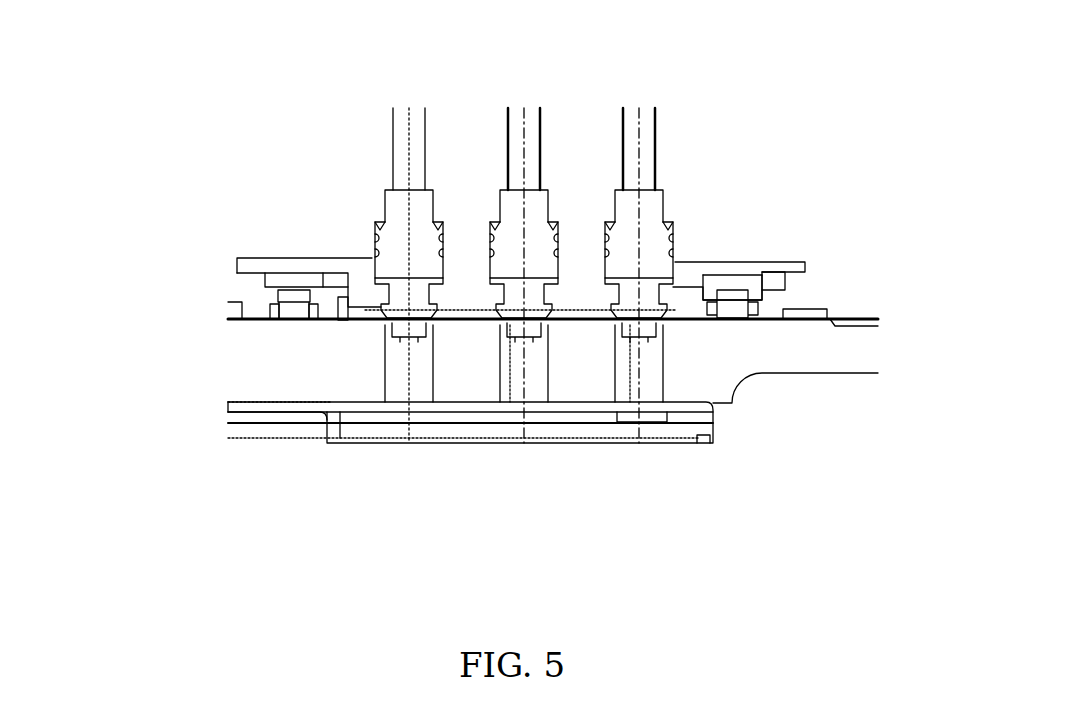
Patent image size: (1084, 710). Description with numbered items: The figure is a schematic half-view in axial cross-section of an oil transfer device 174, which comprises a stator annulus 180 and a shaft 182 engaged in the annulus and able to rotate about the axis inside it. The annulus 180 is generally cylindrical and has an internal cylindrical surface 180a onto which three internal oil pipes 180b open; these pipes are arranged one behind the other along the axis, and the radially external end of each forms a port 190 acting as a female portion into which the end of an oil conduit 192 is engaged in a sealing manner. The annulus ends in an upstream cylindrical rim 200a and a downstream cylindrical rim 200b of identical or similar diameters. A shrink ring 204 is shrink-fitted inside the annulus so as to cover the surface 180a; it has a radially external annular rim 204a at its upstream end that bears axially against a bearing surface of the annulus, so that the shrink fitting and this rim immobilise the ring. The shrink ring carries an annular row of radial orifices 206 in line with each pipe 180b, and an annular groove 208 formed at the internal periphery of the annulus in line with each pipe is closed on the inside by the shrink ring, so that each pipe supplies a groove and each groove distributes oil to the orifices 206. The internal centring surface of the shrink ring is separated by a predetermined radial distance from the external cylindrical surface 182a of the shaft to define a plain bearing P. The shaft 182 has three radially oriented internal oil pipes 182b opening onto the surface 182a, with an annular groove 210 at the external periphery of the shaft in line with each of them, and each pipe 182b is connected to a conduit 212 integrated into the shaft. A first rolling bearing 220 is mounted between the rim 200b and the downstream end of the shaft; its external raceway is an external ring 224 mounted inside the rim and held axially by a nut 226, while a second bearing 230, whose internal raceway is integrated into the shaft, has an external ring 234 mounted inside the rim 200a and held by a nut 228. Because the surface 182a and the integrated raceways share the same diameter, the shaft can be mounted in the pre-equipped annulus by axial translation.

The oil transfer device 174 is at (710, 255).
The stator annulus 180 is at (367, 268).
The internal cylindrical surface 180a is at (498, 420).
The internal oil pipes 180b is at (437, 262).
The shaft 182 is at (857, 347).
The external cylindrical surface 182a is at (363, 323).
The internal oil pipes 182b is at (560, 402).
The port 190 is at (369, 258).
The oil conduit 192 is at (508, 143).
The upstream cylindrical rim 200a is at (268, 258).
The downstream cylindrical rim 200b is at (748, 262).
The shrink ring 204 is at (348, 323).
The radially external annular rim 204a is at (333, 323).
The radial orifices 206 is at (412, 330).
The annular groove 208 is at (516, 300).
The annular groove 210 is at (518, 338).
The conduit 212 is at (237, 440).
The first rolling bearing 220 is at (736, 307).
The external ring 224 is at (748, 282).
The nut 226 is at (765, 283).
The nut 228 is at (240, 283).
The bearing 230 is at (285, 314).
The external ring 234 is at (268, 291).
The plain bearing P is at (603, 333).